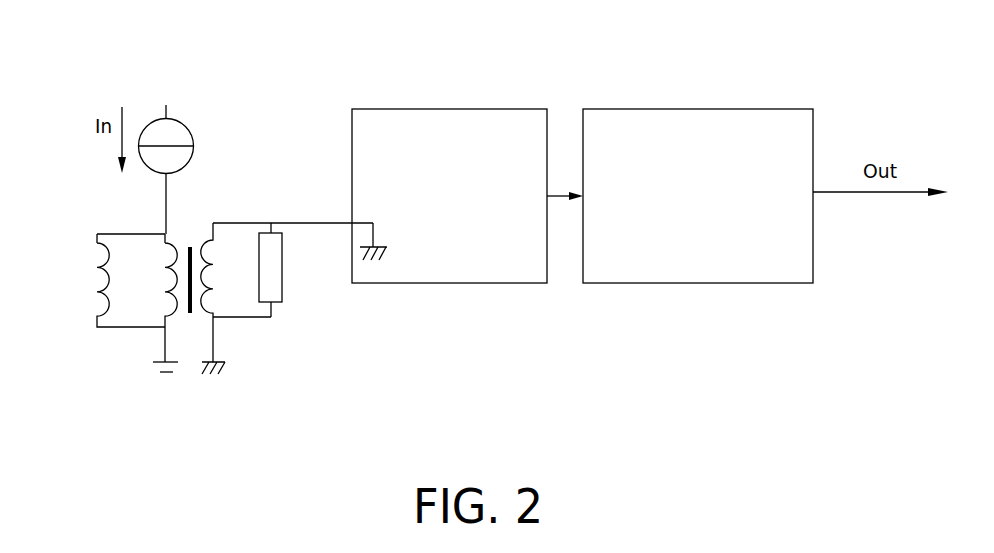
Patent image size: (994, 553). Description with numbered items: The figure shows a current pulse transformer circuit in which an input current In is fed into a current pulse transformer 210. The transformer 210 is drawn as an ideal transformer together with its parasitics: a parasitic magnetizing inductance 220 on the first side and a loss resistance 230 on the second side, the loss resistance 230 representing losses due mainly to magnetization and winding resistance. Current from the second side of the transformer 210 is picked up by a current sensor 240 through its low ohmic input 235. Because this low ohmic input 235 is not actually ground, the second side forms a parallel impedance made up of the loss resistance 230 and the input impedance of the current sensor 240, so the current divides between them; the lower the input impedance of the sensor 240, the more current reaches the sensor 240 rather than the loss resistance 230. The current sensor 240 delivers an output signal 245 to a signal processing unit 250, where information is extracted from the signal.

The current pulse transformer 210 is at (148, 208).
The parasitic magnetizing inductance 220 is at (100, 293).
The loss resistance 230 is at (282, 297).
The low ohmic input 235 is at (373, 223).
The current sensor 240 is at (474, 209).
The output signal 245 is at (553, 194).
The signal processing unit 250 is at (720, 210).